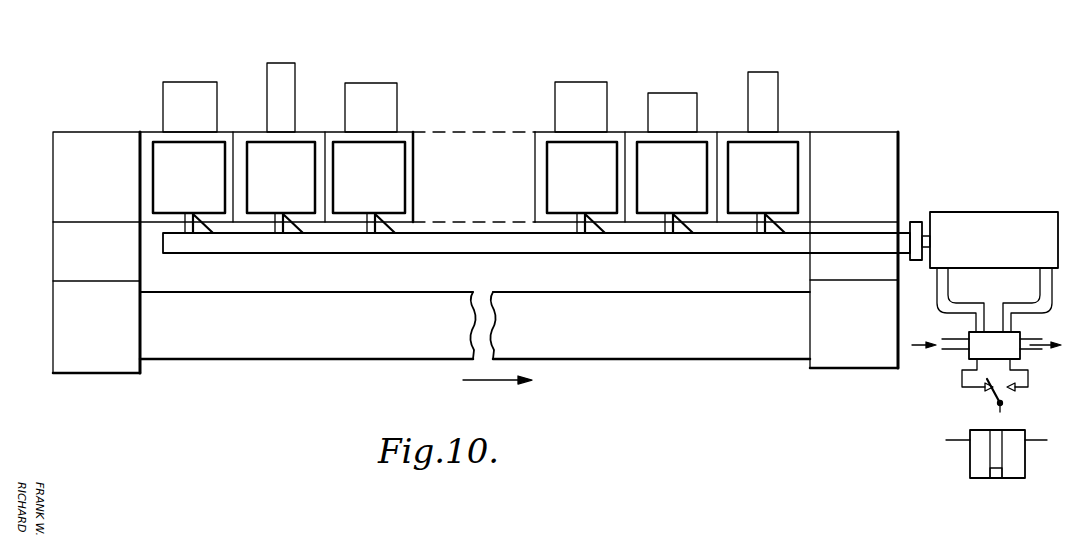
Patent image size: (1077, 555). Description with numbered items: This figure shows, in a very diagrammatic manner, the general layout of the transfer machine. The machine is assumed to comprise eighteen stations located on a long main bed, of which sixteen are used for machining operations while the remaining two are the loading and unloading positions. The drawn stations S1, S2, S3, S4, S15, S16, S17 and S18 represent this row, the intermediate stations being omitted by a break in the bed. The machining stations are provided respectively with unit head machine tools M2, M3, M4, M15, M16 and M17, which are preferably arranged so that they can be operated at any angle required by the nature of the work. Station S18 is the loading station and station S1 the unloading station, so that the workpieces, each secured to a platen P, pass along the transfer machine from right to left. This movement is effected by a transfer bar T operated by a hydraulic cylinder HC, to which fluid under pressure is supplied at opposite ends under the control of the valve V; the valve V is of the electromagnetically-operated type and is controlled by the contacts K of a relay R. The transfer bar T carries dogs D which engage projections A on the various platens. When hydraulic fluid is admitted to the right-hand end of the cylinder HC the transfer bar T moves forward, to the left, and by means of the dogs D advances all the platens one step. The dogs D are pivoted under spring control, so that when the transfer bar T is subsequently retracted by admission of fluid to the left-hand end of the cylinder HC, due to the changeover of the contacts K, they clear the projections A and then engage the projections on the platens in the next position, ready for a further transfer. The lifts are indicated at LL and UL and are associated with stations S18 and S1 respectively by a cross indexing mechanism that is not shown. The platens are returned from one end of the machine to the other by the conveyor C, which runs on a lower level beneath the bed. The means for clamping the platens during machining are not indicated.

The unloading station S1 is at (85, 142).
The machining station S2 is at (147, 133).
The machining station S3 is at (240, 138).
The machining station S4 is at (333, 117).
The machining station S15 is at (541, 133).
The machining station S16 is at (630, 136).
The machining station S17 is at (723, 136).
The loading station S18 is at (860, 140).
The unit head machine tool M2 is at (190, 107).
The unit head machine tool M3 is at (281, 97).
The unit head machine tool M4 is at (371, 107).
The unit head machine tool M15 is at (581, 107).
The unit head machine tool M16 is at (672, 112).
The unit head machine tool M17 is at (759, 78).
The platen P is at (210, 152).
The projection A is at (190, 232).
The dog D is at (293, 236).
The transfer bar T is at (400, 242).
The conveyor C is at (623, 333).
The unload lift UL is at (100, 358).
The load lift LL is at (853, 351).
The hydraulic cylinder HC is at (994, 224).
The valve V is at (987, 332).
The contacts K is at (1006, 398).
The relay R is at (996, 454).